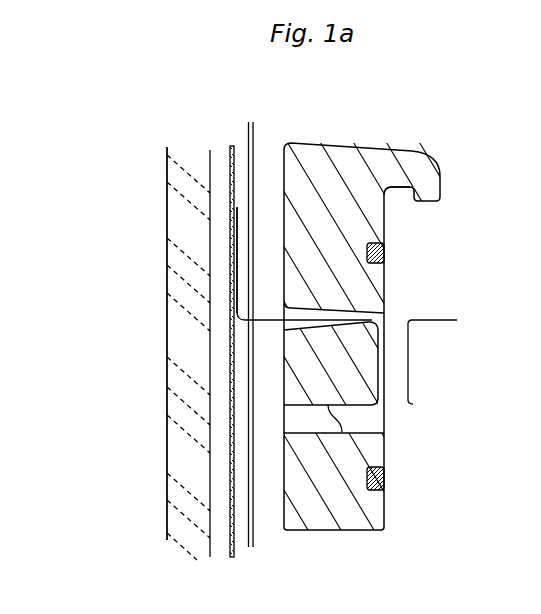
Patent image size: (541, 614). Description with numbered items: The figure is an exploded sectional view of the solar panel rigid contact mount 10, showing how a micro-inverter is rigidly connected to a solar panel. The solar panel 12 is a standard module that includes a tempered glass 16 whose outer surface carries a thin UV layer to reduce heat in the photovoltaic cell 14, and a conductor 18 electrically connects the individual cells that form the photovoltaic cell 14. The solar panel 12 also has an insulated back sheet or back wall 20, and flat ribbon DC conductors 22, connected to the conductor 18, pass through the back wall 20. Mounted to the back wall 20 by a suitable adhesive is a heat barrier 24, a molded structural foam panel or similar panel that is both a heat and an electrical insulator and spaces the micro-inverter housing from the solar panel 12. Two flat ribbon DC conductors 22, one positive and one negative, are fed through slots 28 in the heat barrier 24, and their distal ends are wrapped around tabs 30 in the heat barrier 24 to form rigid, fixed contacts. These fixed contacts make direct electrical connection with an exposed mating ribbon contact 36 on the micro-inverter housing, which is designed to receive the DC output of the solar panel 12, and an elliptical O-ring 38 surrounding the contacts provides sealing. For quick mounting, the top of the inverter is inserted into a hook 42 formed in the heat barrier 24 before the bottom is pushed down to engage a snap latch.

The solar panel rigid contact mount 10 is at (356, 303).
The solar panel 12 is at (143, 432).
The photovoltaic cell 14 is at (232, 543).
The tempered glass 16 is at (167, 293).
The conductor 18 is at (238, 227).
The back wall 20 is at (250, 148).
The flat ribbon DC conductors 22 is at (262, 318).
The heat barrier 24 is at (368, 150).
The slots 28 is at (368, 313).
The tabs 30 is at (375, 359).
The mating ribbon contact 36 is at (409, 356).
The O-ring 38 is at (385, 259).
The hook 42 is at (399, 190).